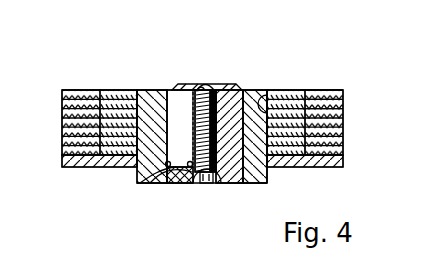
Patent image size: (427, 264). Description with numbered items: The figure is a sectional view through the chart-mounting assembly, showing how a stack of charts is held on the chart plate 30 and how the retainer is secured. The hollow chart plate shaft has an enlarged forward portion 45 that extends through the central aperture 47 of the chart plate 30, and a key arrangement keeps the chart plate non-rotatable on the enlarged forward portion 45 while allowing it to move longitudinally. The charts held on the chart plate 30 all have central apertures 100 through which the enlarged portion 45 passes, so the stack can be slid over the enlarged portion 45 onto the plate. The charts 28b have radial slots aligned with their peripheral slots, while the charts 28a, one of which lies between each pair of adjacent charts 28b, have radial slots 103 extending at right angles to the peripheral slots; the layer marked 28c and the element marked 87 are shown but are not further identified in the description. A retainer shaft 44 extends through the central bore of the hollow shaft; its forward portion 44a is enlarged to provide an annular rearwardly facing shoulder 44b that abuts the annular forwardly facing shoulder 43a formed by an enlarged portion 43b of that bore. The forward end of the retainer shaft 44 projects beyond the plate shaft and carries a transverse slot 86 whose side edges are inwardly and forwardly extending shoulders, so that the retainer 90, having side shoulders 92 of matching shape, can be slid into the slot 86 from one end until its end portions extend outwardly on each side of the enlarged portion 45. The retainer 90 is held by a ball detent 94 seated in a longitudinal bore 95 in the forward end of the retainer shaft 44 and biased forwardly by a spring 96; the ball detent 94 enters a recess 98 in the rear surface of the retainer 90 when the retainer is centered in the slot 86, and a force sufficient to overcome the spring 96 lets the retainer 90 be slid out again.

The radial slots 103 is at (110, 90).
The chart plate 30 is at (343, 165).
The charts 28a is at (345, 91).
The charts 28b is at (345, 97).
The lamination layer 28c is at (345, 104).
The enlarged forward portion 45 is at (143, 97).
The central apertures 100 is at (276, 90).
The forward portion of the retainer shaft 44a is at (246, 90).
The ball detent 94 is at (241, 90).
The side shoulders 92 is at (180, 90).
The transverse slot 86 is at (204, 86).
The countersink 87 is at (194, 89).
The retainer 90 is at (213, 84).
The recess 98 is at (224, 83).
The enlarged portion of the central bore 43b is at (187, 167).
The central aperture 47 is at (166, 160).
The annular rearwardly facing shoulder 44b is at (168, 180).
The retainer shaft 44 is at (192, 178).
The annular forwardly facing shoulder 43a is at (187, 185).
The spring 96 is at (205, 183).
The longitudinal bore 95 is at (233, 186).